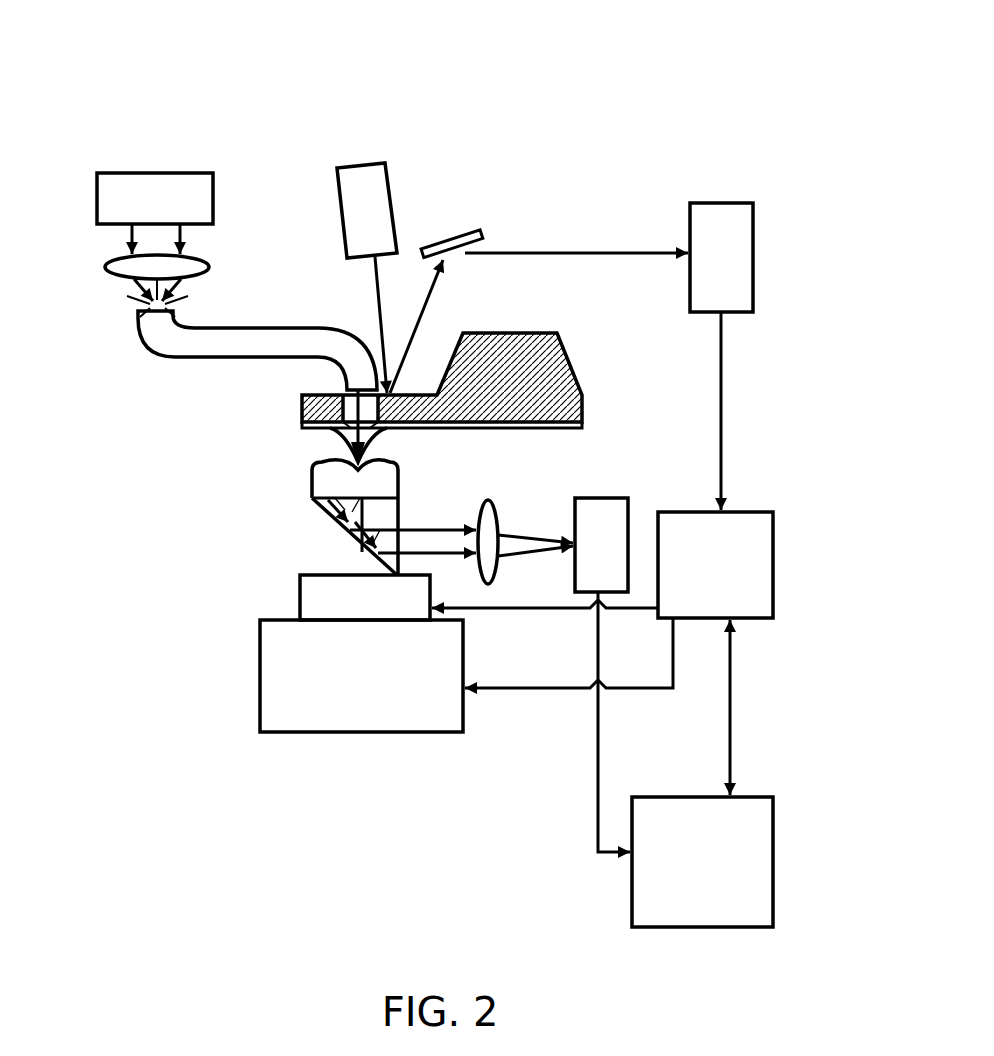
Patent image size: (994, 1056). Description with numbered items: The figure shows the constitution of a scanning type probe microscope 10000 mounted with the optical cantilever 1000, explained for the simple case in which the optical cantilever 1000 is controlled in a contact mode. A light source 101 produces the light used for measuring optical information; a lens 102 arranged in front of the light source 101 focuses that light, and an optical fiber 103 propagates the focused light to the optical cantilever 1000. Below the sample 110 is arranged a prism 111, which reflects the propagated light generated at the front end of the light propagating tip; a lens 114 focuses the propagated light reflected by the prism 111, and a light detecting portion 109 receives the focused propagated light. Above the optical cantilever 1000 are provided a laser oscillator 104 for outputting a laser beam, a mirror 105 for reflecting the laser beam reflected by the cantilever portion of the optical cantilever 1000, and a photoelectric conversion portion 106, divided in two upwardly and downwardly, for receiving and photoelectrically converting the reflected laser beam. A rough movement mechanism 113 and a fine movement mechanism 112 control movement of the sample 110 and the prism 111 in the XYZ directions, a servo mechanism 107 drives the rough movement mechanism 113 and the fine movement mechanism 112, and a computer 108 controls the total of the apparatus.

The scanning type probe microscope 10000 is at (652, 96).
The light source 101 is at (150, 190).
The lens 102 is at (203, 260).
The optical fiber 103 is at (245, 345).
The optical cantilever 1000 is at (538, 358).
The laser oscillator 104 is at (372, 193).
The mirror 105 is at (468, 228).
The photoelectric conversion portion 106 is at (720, 210).
The servo mechanism 107 is at (755, 530).
The computer 108 is at (670, 818).
The light detecting portion 109 is at (620, 508).
The sample 110 is at (325, 482).
The prism 111 is at (323, 505).
The fine movement mechanism 112 is at (317, 587).
The rough movement mechanism 113 is at (280, 668).
The lens 114 is at (487, 513).